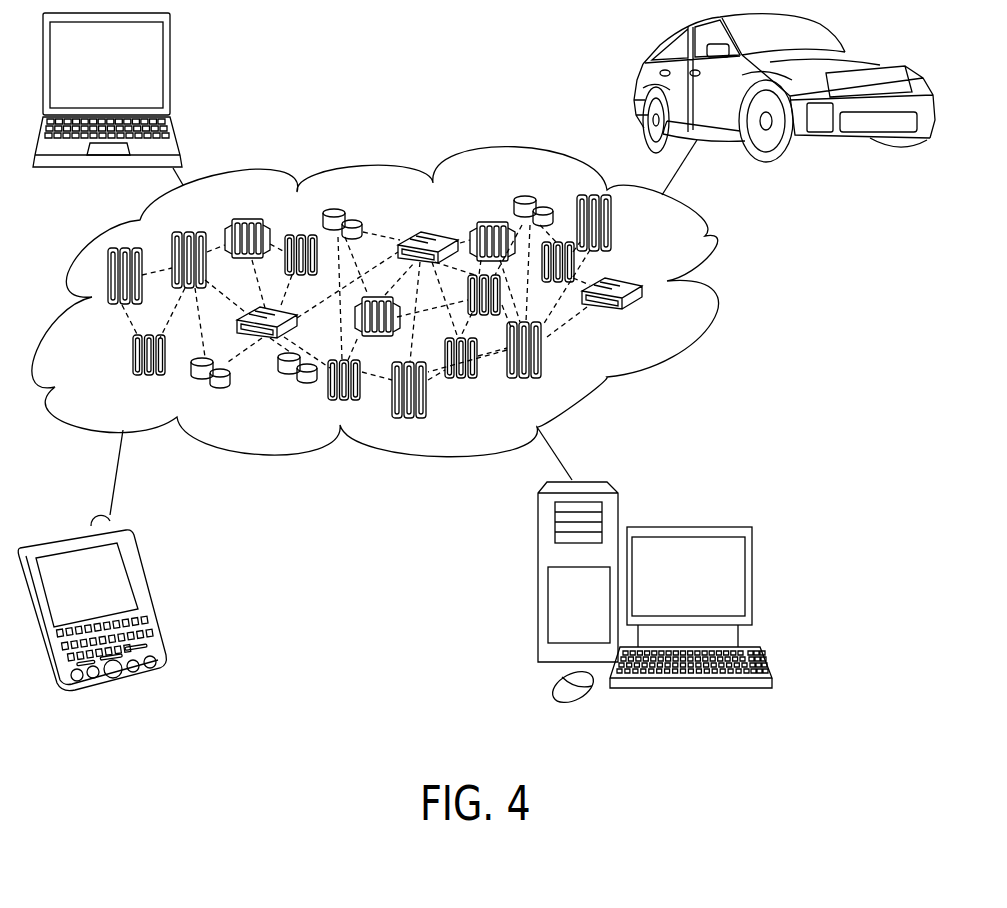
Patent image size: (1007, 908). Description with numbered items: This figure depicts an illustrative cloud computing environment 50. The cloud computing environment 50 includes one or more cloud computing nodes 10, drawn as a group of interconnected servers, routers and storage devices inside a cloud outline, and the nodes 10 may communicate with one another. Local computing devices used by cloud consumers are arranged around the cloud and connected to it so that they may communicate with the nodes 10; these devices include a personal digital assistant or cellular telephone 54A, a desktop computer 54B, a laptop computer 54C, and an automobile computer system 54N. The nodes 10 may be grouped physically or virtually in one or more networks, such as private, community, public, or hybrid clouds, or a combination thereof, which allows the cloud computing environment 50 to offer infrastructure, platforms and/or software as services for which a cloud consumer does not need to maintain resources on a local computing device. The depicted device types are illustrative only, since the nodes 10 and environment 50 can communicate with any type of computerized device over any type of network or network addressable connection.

The cloud computing nodes 10 is at (662, 335).
The cloud computing environment 50 is at (705, 233).
The personal digital assistant (PDA) or cellular telephone 54A is at (138, 577).
The desktop computer 54B is at (752, 575).
The laptop computer 54C is at (172, 70).
The automobile computer system 54N is at (820, 33).